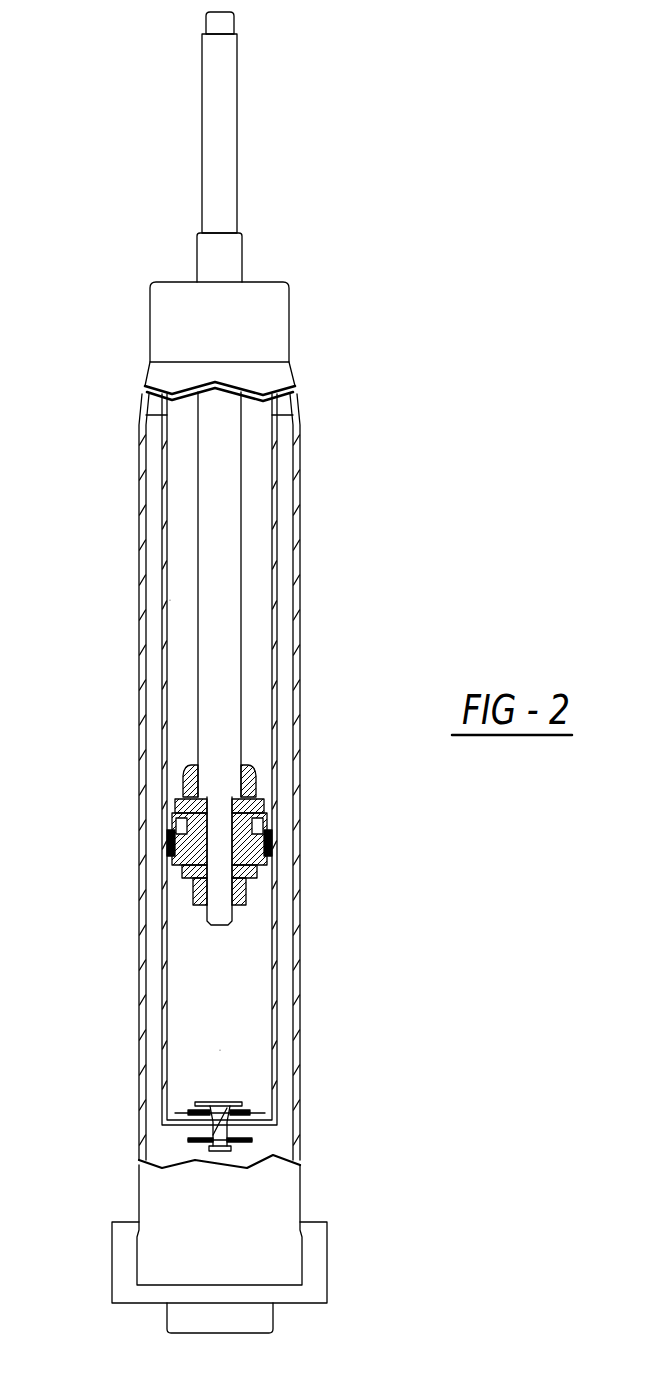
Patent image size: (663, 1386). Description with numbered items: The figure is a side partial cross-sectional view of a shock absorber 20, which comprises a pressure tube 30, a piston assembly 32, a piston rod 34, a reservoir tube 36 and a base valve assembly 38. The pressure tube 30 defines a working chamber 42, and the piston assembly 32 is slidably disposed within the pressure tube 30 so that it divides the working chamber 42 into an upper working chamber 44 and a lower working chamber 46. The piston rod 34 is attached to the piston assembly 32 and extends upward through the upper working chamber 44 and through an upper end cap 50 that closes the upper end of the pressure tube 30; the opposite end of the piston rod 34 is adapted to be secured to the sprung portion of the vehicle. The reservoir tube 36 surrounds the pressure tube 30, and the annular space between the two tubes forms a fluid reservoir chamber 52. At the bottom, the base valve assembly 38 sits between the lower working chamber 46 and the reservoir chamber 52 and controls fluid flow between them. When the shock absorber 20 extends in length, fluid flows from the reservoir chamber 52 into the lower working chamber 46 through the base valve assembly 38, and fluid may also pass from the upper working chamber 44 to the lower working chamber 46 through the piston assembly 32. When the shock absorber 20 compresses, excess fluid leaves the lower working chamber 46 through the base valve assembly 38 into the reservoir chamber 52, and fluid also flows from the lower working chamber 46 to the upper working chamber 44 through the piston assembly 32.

The shock absorber 20 is at (389, 222).
The pressure tube 30 is at (277, 563).
The piston assembly 32 is at (263, 783).
The piston rod 34 is at (241, 548).
The reservoir tube 36 is at (138, 692).
The base valve assembly 38 is at (248, 1112).
The working chamber 42 is at (243, 918).
The upper working chamber 44 is at (253, 533).
The lower working chamber 46 is at (237, 998).
The upper end cap 50 is at (273, 320).
The fluid reservoir chamber 52 is at (153, 602).